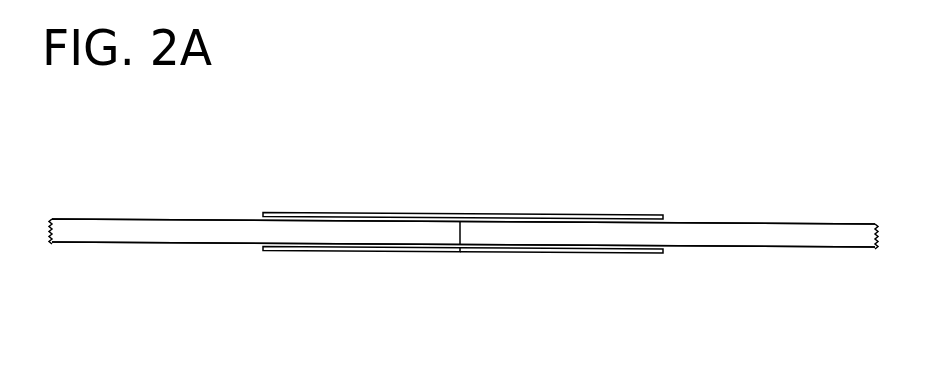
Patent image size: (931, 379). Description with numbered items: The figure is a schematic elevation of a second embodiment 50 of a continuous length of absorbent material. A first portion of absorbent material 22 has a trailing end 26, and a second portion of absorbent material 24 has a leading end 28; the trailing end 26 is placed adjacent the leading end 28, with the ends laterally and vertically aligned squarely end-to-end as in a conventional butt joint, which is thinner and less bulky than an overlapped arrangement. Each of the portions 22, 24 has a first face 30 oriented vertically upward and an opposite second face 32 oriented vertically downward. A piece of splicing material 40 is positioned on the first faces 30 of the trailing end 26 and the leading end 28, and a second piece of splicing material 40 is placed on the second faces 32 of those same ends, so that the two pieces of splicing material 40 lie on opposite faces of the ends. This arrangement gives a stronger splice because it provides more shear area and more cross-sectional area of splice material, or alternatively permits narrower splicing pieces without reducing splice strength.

The first portion of absorbent material 22 is at (142, 218).
The second portion of absorbent material 24 is at (797, 223).
The trailing end 26 is at (382, 251).
The leading end 28 is at (550, 252).
The first face 30 is at (227, 219).
The second face 32 is at (215, 243).
The piece of splicing material 40 is at (379, 213).
The second embodiment of a continuous length of absorbent material 50 is at (498, 188).